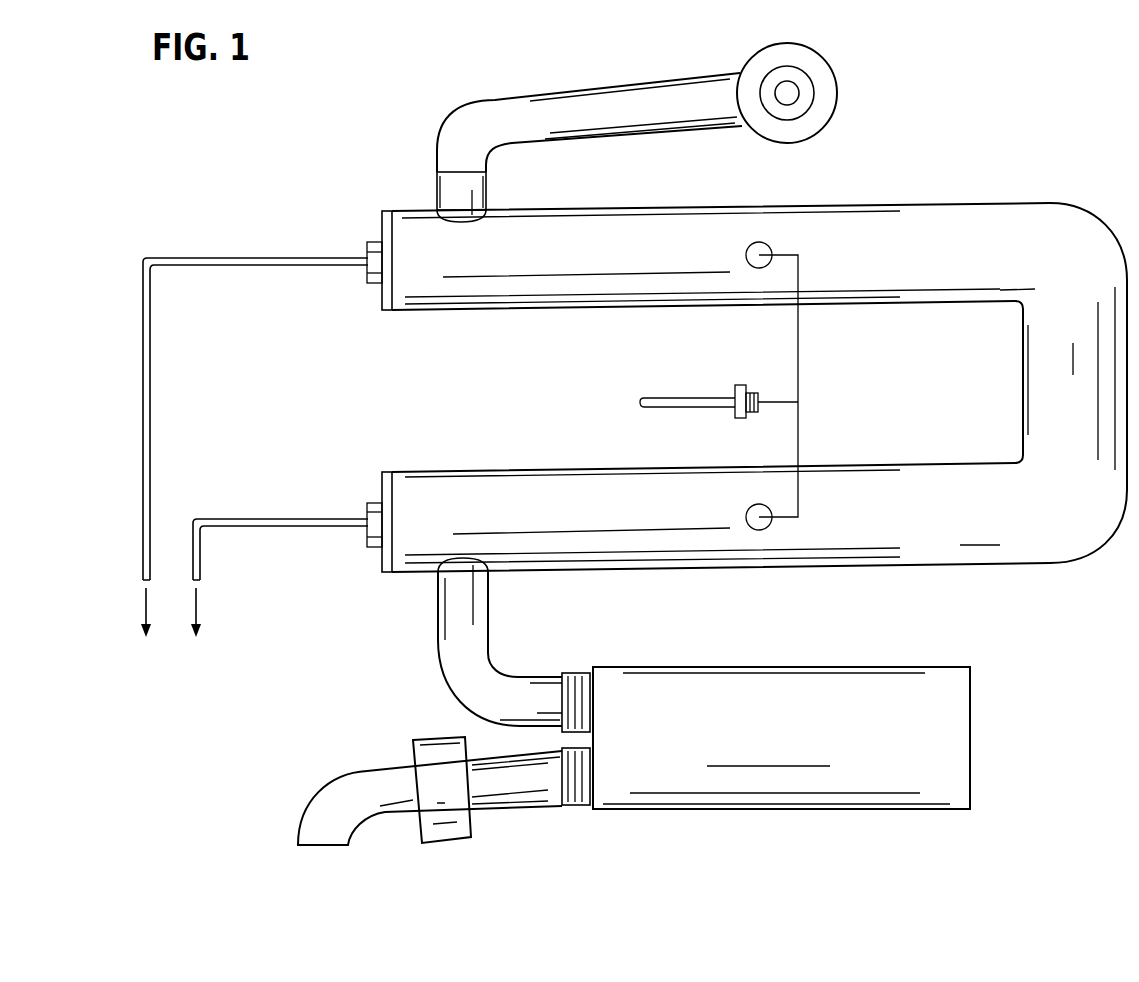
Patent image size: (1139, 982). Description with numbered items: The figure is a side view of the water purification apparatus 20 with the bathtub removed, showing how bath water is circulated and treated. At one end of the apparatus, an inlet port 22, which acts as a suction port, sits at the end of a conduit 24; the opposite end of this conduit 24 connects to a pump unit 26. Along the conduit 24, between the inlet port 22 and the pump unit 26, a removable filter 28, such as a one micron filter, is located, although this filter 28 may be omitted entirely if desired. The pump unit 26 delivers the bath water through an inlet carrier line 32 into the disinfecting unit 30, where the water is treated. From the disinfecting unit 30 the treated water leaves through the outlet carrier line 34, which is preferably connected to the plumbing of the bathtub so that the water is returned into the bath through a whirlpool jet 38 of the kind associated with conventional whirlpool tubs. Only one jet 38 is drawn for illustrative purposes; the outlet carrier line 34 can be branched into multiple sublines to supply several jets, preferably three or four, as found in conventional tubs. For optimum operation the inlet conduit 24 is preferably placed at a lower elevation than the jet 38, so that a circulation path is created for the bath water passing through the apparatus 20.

The water purification apparatus 20 is at (356, 176).
The inlet port 22 is at (320, 847).
The conduit 24 is at (363, 769).
The pump unit 26 is at (781, 742).
The removable filter 28 is at (452, 840).
The disinfecting unit 30 is at (402, 470).
The inlet carrier line 32 is at (489, 633).
The outlet carrier line 34 is at (525, 100).
The whirlpool jet 38 is at (793, 97).